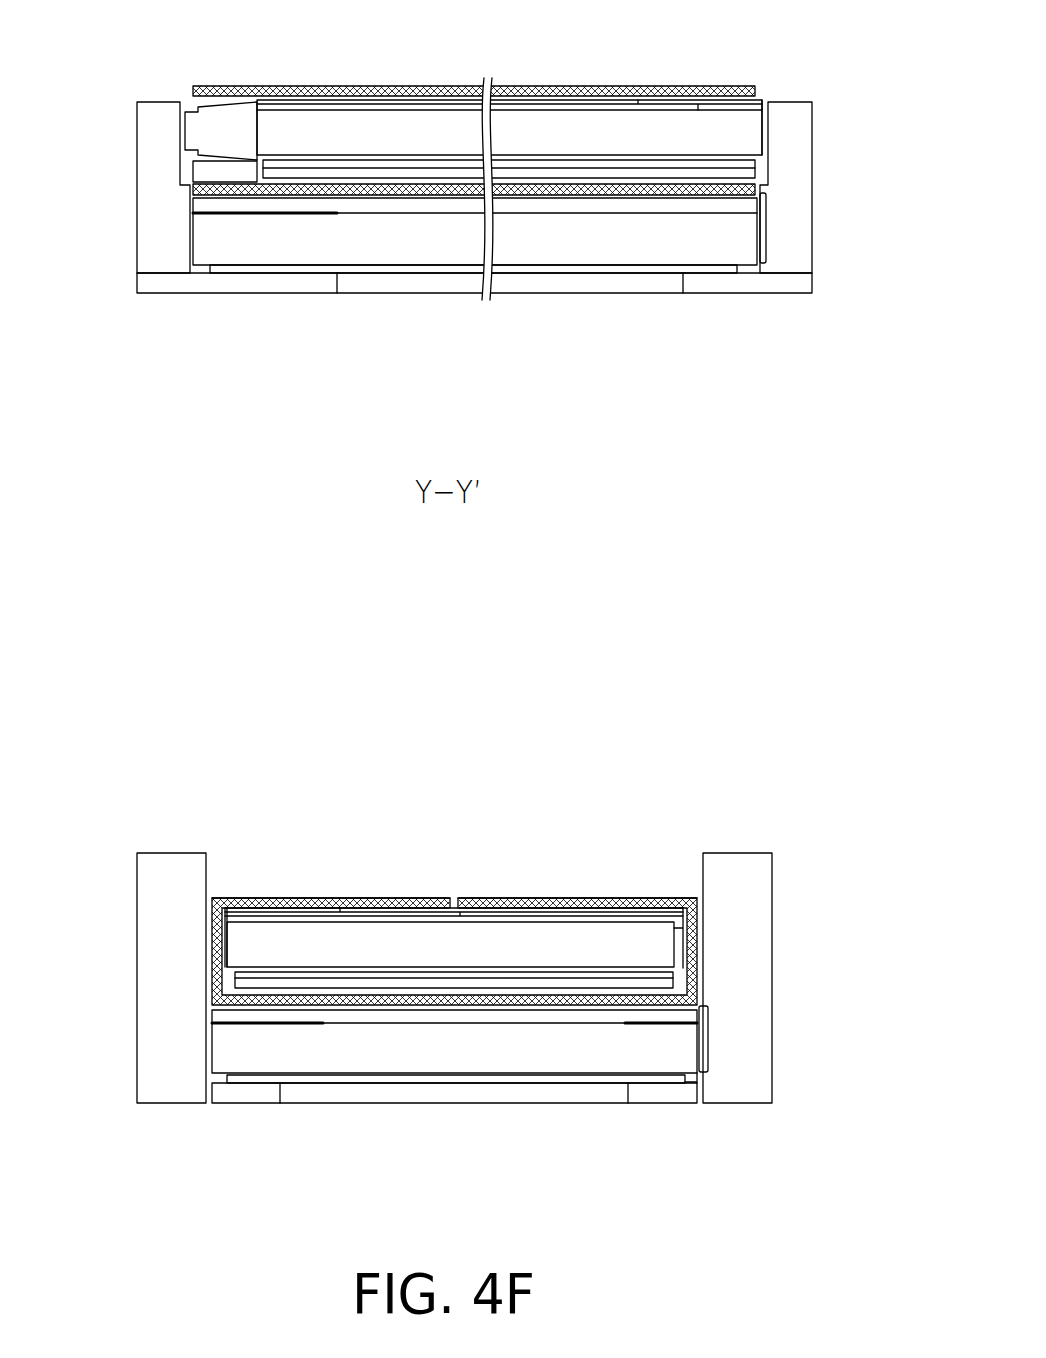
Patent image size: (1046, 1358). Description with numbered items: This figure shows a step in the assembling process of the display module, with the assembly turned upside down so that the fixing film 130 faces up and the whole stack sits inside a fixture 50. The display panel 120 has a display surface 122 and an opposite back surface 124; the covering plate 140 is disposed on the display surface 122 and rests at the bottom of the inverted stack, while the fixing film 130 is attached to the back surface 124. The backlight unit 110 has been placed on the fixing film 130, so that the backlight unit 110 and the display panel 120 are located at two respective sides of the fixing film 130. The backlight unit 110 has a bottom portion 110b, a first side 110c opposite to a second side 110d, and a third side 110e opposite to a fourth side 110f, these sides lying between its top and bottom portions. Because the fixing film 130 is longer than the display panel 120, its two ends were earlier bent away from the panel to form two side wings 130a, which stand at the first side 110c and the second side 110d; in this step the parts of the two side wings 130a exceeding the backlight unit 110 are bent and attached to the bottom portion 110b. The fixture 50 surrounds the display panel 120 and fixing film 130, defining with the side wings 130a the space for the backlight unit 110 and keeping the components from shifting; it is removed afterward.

The fixture 50 is at (805, 152).
The backlight unit 110 is at (278, 123).
The bottom portion 110b is at (430, 91).
The first side 110c is at (218, 955).
The second side 110d is at (692, 955).
The third side 110e is at (174, 142).
The fourth side 110f is at (771, 142).
The display panel 120 is at (766, 230).
The display surface 122 is at (423, 275).
The back surface 124 is at (545, 188).
The fixing film 130 is at (755, 92).
The side wings 130a is at (290, 896).
The covering plate 140 is at (613, 1093).